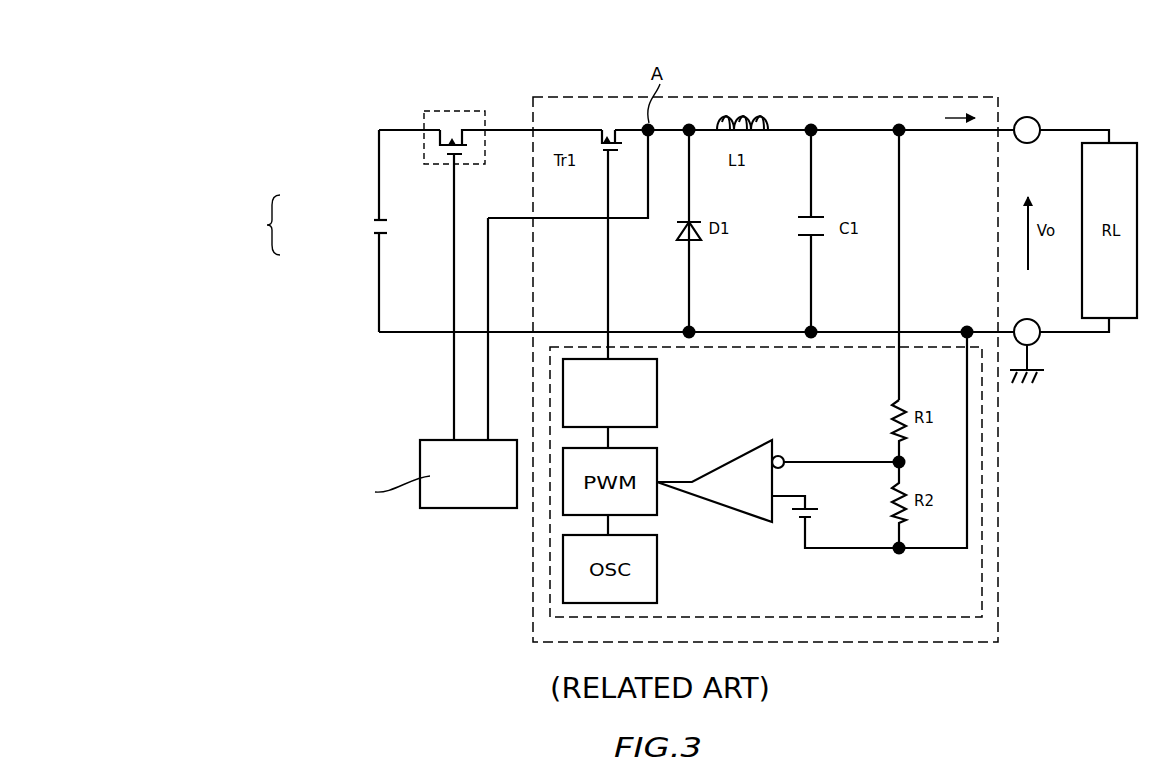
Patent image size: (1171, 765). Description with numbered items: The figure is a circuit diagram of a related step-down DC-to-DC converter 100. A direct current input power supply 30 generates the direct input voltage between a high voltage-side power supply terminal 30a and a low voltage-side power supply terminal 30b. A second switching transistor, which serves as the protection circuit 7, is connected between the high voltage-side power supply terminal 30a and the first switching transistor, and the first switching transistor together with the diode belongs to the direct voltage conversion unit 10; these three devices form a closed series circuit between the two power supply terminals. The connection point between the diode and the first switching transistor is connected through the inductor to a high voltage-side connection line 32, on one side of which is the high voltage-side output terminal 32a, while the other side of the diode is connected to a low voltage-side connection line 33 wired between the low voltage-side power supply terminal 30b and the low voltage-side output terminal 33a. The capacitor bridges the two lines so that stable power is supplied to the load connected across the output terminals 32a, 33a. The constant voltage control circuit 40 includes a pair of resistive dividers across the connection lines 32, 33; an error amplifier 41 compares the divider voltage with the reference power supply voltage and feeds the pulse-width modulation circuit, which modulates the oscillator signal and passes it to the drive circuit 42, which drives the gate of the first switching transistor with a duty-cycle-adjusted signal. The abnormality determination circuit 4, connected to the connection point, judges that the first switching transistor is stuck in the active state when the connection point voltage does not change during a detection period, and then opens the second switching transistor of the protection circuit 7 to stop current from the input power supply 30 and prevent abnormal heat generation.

The DC-to-DC converter 100 is at (938, 42).
The protection circuit 7 is at (445, 110).
The direct current input power supply 30 is at (313, 230).
The high voltage-side power supply terminal 30a is at (373, 221).
The low voltage-side power supply terminal 30b is at (373, 233).
The abnormality determination circuit 4 is at (450, 510).
The direct voltage conversion unit 10 is at (999, 470).
The constant voltage control circuit 40 is at (998, 580).
The drive circuit 42 is at (658, 400).
The error amplifier 41 is at (725, 498).
The high voltage-side connection line 32 is at (856, 126).
The high voltage-side output terminal 32a is at (1025, 118).
The low voltage-side connection line 33 is at (1088, 334).
The low voltage-side output terminal 33a is at (1030, 366).